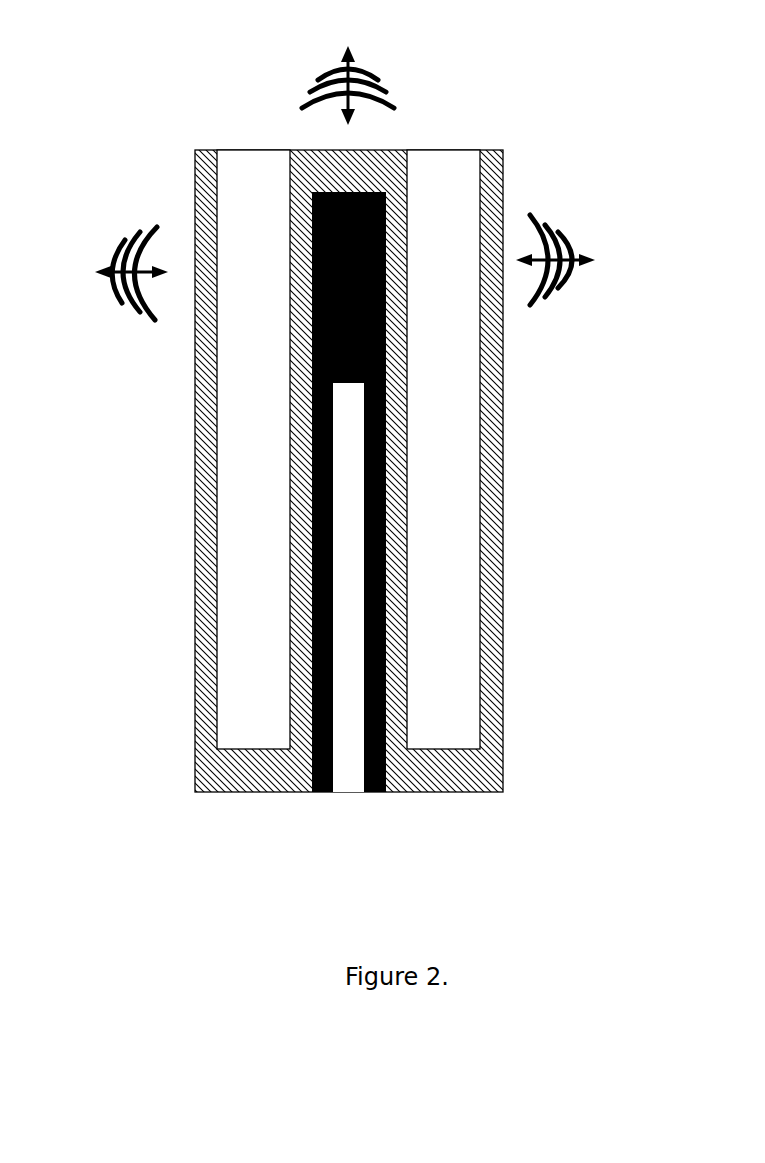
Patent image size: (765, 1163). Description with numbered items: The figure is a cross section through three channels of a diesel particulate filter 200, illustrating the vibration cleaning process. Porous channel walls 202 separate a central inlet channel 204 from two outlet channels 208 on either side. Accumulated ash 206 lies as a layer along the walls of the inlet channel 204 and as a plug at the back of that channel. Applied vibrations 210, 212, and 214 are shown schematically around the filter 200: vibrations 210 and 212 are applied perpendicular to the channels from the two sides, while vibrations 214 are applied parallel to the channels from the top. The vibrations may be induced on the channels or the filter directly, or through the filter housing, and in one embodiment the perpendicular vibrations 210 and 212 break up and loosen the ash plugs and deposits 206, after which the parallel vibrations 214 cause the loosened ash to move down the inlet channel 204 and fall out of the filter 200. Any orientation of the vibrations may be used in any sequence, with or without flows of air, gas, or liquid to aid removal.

The diesel particulate filter 200 is at (352, 446).
The porous channel walls 202 is at (503, 475).
The inlet channel 204 is at (355, 803).
The accumulated ash 206 is at (349, 492).
The outlet channels 208 is at (238, 138).
The applied vibrations 210 is at (113, 245).
The applied vibrations 212 is at (573, 222).
The applied vibrations 214 is at (300, 85).